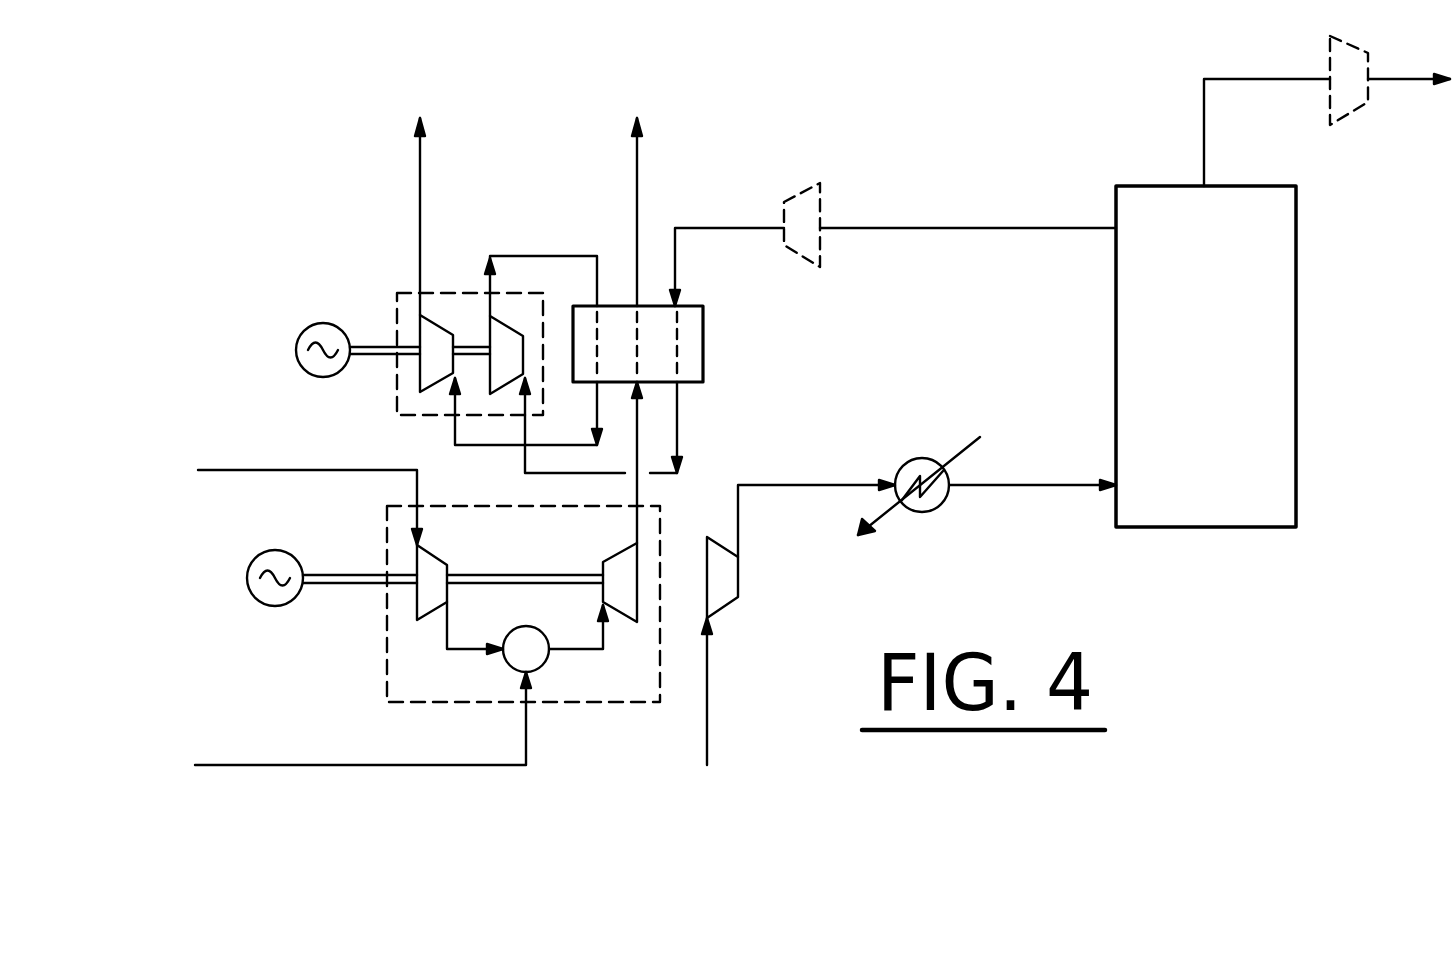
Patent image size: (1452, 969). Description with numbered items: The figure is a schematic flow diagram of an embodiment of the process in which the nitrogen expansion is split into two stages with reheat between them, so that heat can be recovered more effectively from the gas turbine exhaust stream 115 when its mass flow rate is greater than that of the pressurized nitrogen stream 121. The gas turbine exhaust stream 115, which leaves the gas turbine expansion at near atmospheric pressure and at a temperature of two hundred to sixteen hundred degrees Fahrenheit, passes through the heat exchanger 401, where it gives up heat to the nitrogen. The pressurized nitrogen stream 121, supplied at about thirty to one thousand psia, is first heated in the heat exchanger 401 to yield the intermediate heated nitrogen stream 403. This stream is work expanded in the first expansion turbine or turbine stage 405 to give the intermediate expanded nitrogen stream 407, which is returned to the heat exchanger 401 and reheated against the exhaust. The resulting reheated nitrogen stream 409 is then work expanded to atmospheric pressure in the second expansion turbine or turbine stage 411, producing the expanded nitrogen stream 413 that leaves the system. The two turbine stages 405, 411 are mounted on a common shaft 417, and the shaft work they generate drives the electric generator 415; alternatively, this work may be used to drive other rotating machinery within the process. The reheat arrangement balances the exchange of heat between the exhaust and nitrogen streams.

The exhaust stream 115 is at (637, 487).
The pressurized nitrogen stream 121 is at (728, 228).
The heat exchanger 401 is at (703, 345).
The intermediate heated nitrogen stream 403 is at (525, 463).
The expansion turbine or turbine stage 405 is at (488, 340).
The intermediate expanded nitrogen stream 407 is at (557, 256).
The reheated nitrogen stream 409 is at (454, 438).
The expansion turbine or turbine stage 411 is at (418, 333).
The expanded nitrogen stream 413 is at (418, 190).
The electric generator 415 is at (300, 328).
The shaft 417 is at (372, 358).